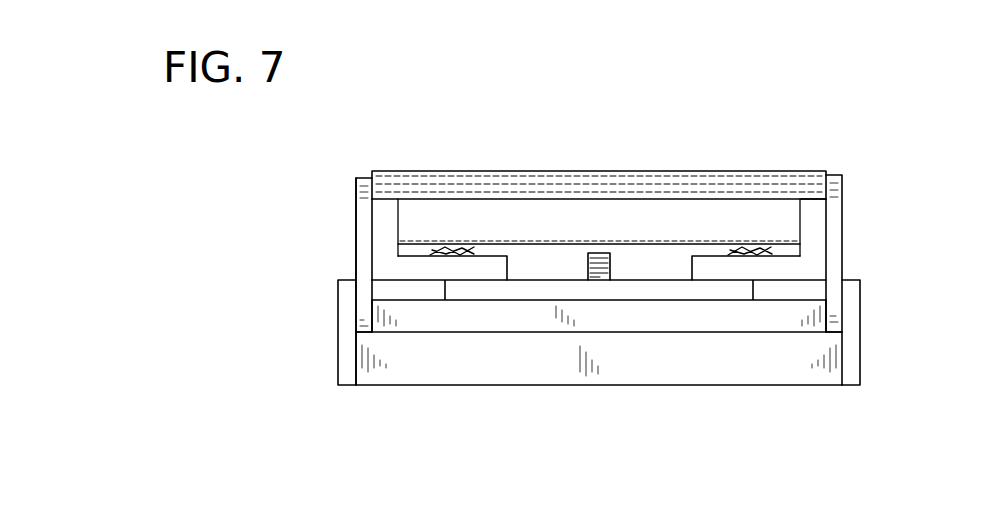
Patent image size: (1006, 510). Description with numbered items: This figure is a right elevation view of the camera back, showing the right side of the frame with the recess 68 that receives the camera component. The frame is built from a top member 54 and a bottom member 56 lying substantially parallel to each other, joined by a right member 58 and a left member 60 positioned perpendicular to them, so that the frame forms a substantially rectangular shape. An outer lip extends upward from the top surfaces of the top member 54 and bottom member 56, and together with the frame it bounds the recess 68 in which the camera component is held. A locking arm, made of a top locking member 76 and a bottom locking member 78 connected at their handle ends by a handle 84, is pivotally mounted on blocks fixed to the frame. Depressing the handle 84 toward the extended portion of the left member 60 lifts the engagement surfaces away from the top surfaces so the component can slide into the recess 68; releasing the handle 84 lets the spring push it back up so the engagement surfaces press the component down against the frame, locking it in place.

The top member 54 is at (855, 372).
The bottom member 56 is at (346, 368).
The right member 58 is at (484, 352).
The left member 60 is at (682, 317).
The recess 68 is at (543, 296).
The top locking member 76 is at (842, 196).
The bottom locking member 78 is at (350, 178).
The handle 84 is at (592, 170).